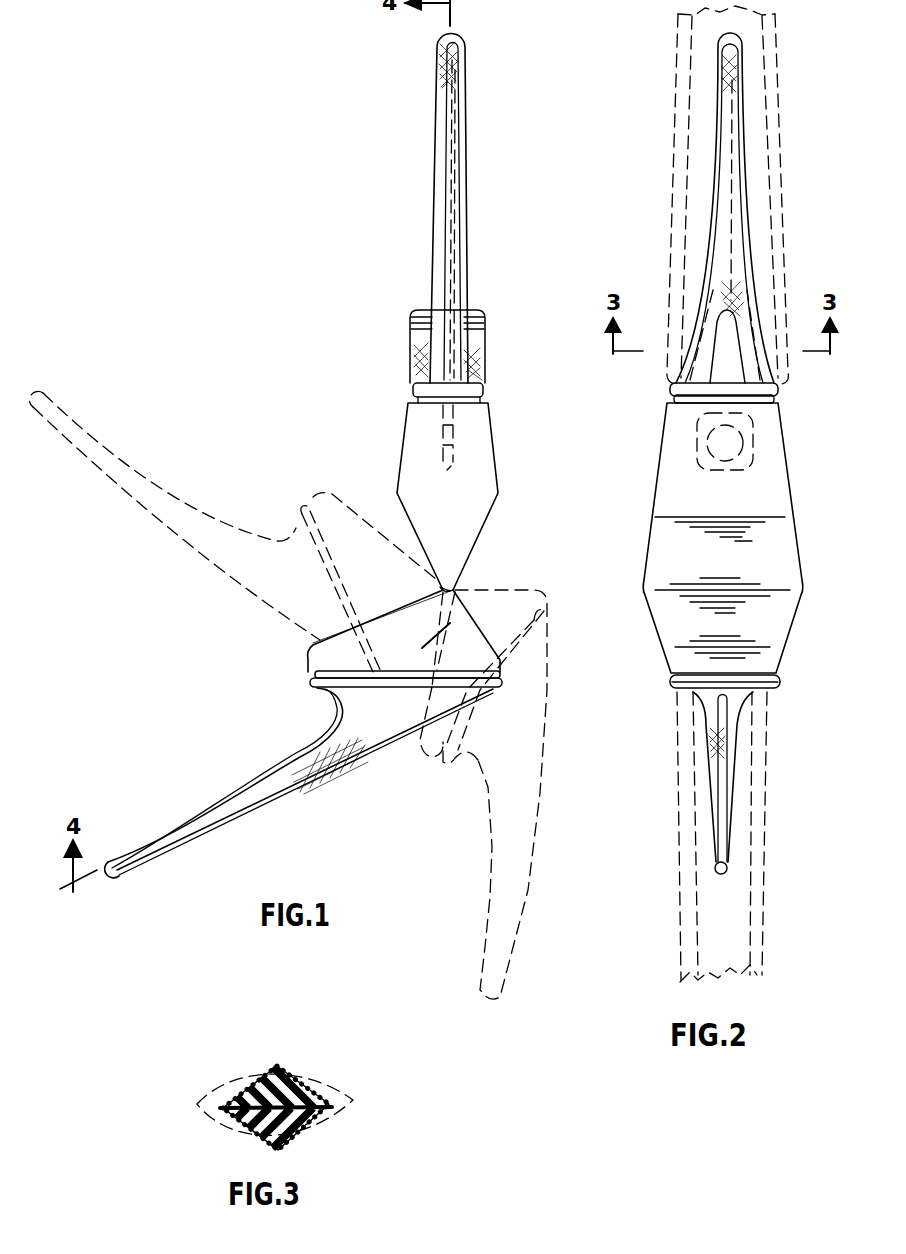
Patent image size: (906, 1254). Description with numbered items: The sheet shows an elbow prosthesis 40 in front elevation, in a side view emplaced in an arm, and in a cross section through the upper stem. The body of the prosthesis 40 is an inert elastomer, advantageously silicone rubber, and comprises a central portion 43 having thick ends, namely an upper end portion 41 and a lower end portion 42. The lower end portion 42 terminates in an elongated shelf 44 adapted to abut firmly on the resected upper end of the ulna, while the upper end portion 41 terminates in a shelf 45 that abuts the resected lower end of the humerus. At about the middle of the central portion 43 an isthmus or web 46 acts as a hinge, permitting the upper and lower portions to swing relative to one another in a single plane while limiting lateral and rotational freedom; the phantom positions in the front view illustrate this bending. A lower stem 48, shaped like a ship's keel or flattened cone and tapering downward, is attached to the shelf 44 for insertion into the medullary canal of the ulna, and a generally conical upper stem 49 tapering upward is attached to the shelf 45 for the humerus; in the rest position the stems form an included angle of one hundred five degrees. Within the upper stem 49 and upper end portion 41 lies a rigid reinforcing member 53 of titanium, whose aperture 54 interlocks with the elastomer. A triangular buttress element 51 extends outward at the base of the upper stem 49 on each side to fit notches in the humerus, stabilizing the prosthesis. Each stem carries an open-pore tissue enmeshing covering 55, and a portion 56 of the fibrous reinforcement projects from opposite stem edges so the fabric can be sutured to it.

In FIG. 1, the elbow prosthesis 40 is at (390, 206).
In FIG. 2, the elbow prosthesis 40 is at (662, 206).
In FIG. 1, the upper end portion 41 is at (408, 447).
In FIG. 2, the upper end portion 41 is at (775, 470).
In FIG. 1, the lower end portion 42 is at (316, 650).
In FIG. 2, the lower end portion 42 is at (664, 633).
In FIG. 1, the central portion 43 is at (470, 544).
In FIG. 2, the central portion 43 is at (660, 564).
In FIG. 1, the elongated shelf 44 is at (500, 686).
In FIG. 2, the elongated shelf 44 is at (770, 684).
In FIG. 1, the shelf 45 is at (413, 390).
In FIG. 2, the shelf 45 is at (672, 388).
In FIG. 1, the isthmus or web 46 is at (455, 590).
In FIG. 2, the isthmus or web 46 is at (770, 589).
In FIG. 1, the lower stem 48 is at (257, 800).
In FIG. 2, the lower stem 48 is at (712, 724).
In FIG. 1, the upper stem 49 is at (462, 89).
In FIG. 2, the upper stem 49 is at (731, 88).
In FIG. 1, the buttress element 51 is at (416, 312).
In FIG. 2, the buttress element 51 is at (716, 323).
In FIG. 3, the buttress element 51 is at (283, 1072).
In FIG. 1, the reinforcing member 53 is at (453, 297).
In FIG. 2, the reinforcing member 53 is at (755, 426).
In FIG. 1, the aperture 54 is at (480, 433).
In FIG. 2, the aperture 54 is at (705, 442).
In FIG. 3, the tissue enmeshing covering 55 is at (230, 1105).
In FIG. 1, the portion of the reinforcement 56 is at (452, 178).
In FIG. 2, the portion of the reinforcement 56 is at (742, 170).